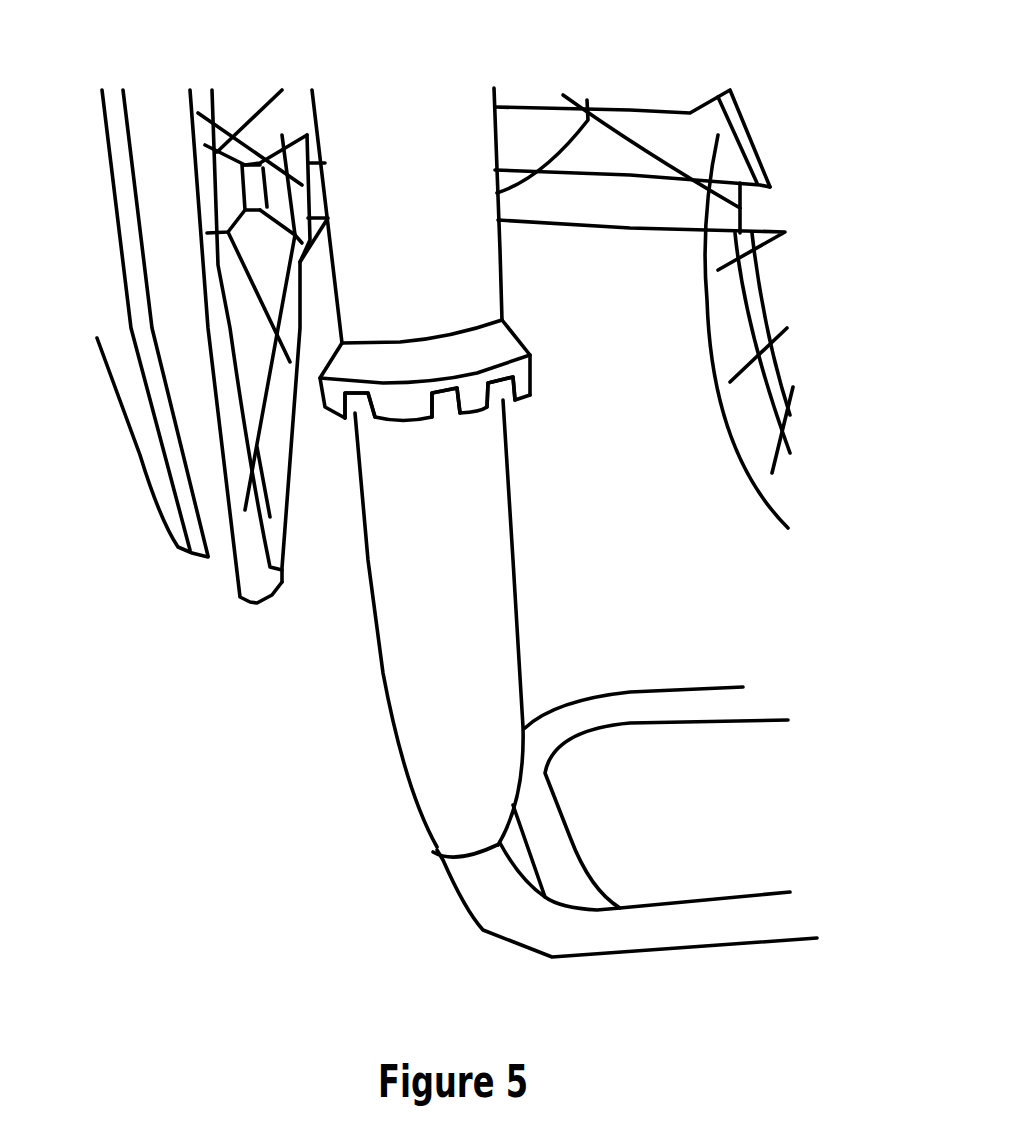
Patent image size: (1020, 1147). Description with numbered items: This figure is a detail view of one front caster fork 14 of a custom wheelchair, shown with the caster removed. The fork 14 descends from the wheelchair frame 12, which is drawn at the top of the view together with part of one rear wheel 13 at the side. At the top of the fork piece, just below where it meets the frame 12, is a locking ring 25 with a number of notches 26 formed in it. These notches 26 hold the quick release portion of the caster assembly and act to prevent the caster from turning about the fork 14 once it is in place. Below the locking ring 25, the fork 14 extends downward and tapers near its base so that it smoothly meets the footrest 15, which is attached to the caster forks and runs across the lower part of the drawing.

The frame 12 is at (433, 182).
The rear wheel 13 is at (228, 528).
The caster fork 14 is at (412, 648).
The footrest 15 is at (672, 935).
The locking ring 25 is at (540, 375).
The notches 26 is at (358, 413).